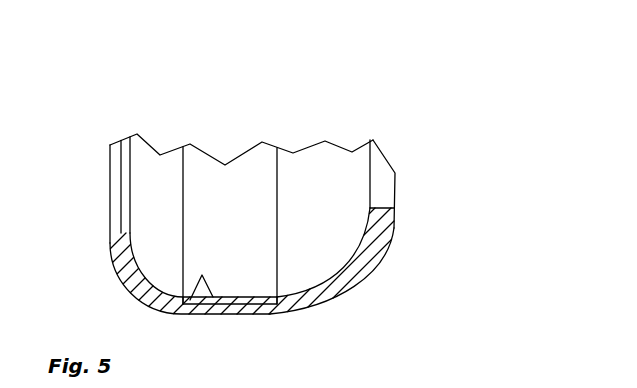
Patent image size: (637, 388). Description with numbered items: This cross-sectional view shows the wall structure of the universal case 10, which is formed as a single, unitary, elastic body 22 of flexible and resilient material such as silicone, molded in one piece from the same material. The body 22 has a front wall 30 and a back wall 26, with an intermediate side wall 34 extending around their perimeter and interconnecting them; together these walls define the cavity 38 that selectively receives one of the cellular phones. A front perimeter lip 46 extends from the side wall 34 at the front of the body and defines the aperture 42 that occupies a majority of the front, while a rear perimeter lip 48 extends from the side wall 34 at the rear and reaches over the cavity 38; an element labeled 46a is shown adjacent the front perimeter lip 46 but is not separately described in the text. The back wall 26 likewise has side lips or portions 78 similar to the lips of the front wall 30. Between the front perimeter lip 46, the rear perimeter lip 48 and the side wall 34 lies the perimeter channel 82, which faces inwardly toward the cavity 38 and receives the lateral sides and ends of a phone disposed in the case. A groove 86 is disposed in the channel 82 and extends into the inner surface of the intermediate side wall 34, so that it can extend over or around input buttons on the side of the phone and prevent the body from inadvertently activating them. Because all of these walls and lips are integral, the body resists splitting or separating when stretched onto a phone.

The case 10 is at (354, 114).
The body 22 is at (258, 160).
The back wall 26 is at (390, 178).
The front wall 30 is at (147, 233).
The side wall 34 is at (200, 167).
The cavity 38 is at (148, 157).
The aperture 42 is at (121, 158).
The front perimeter lip 46 is at (125, 222).
The thickened wall portion 46a is at (147, 234).
The rear perimeter lip 48 is at (373, 217).
The side lip 78 is at (393, 221).
The perimeter channel 82 is at (327, 250).
The groove 86 is at (202, 275).